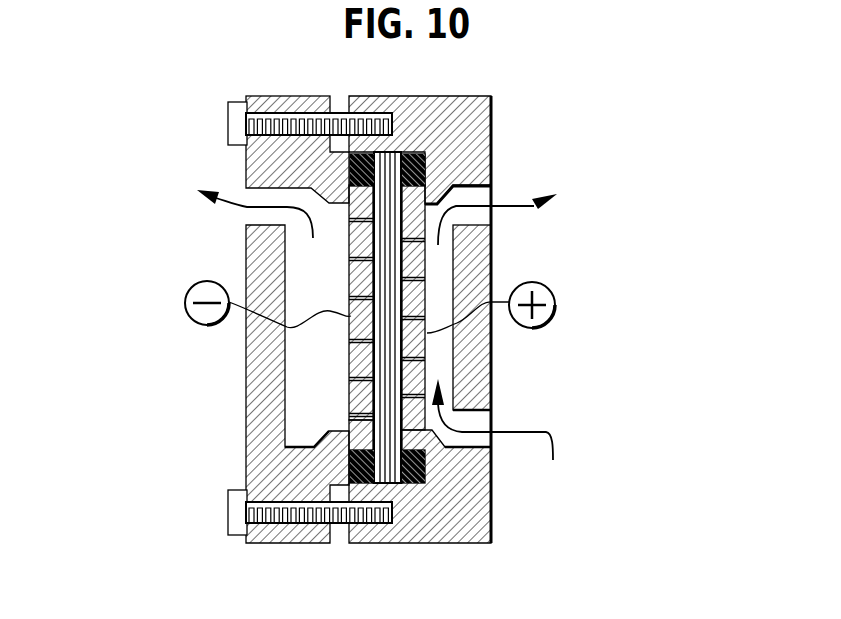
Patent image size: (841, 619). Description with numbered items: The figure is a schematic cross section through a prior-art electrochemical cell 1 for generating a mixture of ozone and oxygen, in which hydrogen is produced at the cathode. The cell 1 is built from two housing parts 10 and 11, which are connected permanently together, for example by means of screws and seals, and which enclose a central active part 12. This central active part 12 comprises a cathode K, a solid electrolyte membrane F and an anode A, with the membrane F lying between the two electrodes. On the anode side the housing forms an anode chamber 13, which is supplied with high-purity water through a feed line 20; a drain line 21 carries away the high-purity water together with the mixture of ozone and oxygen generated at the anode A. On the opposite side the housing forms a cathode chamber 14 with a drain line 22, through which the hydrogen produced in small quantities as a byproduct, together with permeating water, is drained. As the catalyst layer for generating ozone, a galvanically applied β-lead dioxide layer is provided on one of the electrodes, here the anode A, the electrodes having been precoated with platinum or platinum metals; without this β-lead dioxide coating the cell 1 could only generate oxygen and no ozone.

The electrochemical cell 1 is at (507, 105).
The housing part 10 is at (287, 538).
The housing part 11 is at (437, 538).
The central active part 12 is at (384, 258).
The anode chamber 13 is at (443, 345).
The cathode chamber 14 is at (311, 380).
The feed line 20 is at (512, 434).
The drain line 21 is at (520, 203).
The drain line 22 is at (233, 202).
The cathode K is at (373, 277).
The solid electrolyte membrane F is at (387, 413).
The anode A is at (427, 368).